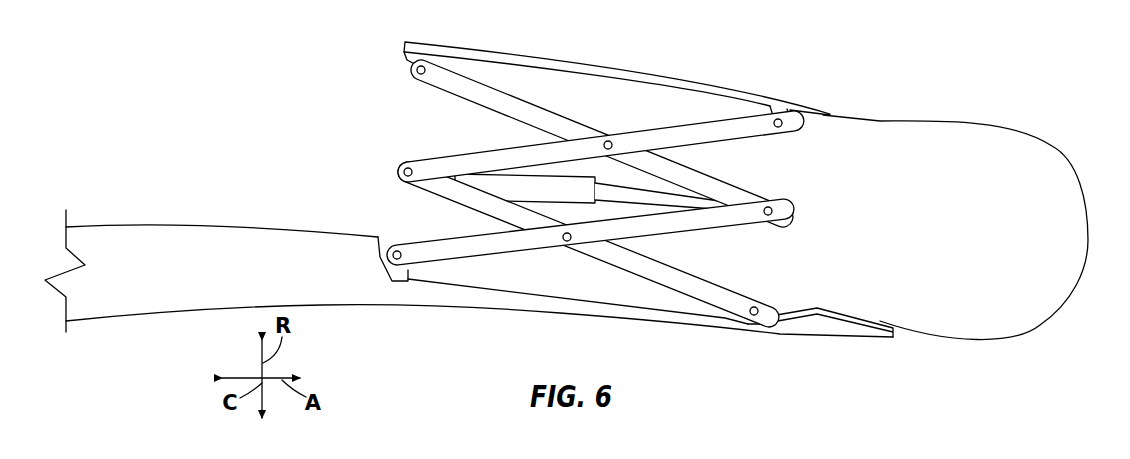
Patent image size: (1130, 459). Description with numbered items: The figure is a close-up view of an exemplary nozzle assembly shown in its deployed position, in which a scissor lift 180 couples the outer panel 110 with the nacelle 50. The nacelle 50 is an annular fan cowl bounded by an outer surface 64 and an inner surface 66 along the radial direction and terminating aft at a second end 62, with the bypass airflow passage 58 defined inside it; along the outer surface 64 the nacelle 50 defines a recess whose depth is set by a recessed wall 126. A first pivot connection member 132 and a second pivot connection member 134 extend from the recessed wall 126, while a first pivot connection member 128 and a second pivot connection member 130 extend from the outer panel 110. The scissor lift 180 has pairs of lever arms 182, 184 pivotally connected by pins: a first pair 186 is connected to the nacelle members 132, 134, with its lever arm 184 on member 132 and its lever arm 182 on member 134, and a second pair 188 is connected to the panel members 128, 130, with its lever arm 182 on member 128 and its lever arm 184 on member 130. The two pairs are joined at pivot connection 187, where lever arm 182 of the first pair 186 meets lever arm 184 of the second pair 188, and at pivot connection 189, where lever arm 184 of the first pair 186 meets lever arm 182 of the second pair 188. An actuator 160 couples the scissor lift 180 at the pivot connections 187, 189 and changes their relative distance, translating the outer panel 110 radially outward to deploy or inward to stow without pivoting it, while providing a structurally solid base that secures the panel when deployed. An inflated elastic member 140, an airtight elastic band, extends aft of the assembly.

The nacelle 50 is at (469, 271).
The bypass airflow passage 58 is at (397, 360).
The second end 62 is at (890, 344).
The outer surface 64 is at (138, 221).
The inner surface 66 is at (158, 318).
The outer panel 110 is at (580, 61).
The recessed wall 126 is at (606, 300).
The first pivot connection member 128 is at (402, 56).
The second pivot connection member 130 is at (795, 117).
The first pivot connection member 132 is at (411, 283).
The second pivot connection member 134 is at (782, 322).
The elastic member 140 is at (950, 122).
The actuator 160 is at (573, 175).
The scissor lift 180 is at (614, 193).
The lever arm 182 is at (707, 280).
The lever arm 184 is at (497, 248).
The first pair of lever arms 186 is at (800, 253).
The pivot connection 187 is at (396, 172).
The second pair of lever arms 188 is at (808, 168).
The pivot connection 189 is at (786, 212).